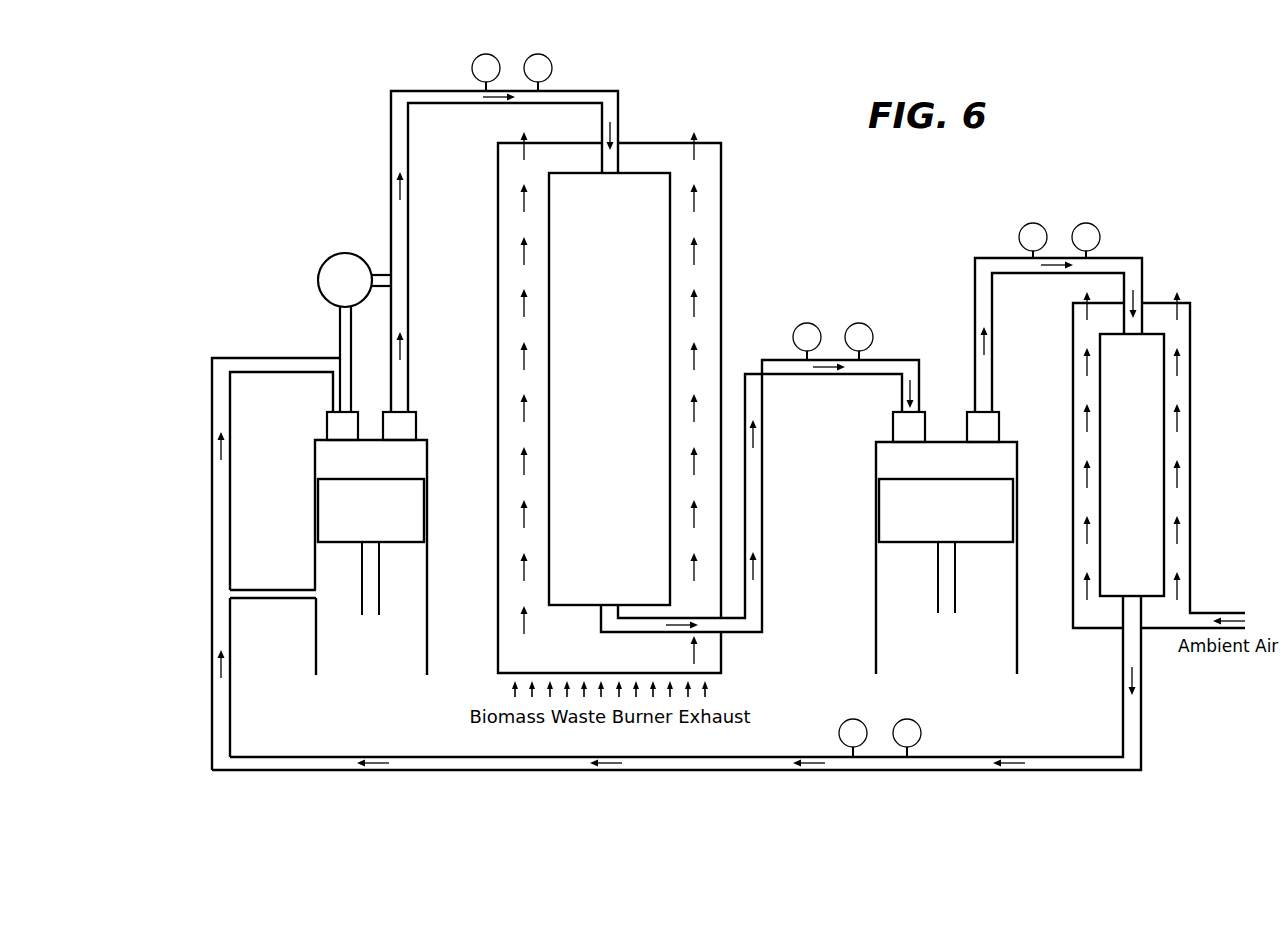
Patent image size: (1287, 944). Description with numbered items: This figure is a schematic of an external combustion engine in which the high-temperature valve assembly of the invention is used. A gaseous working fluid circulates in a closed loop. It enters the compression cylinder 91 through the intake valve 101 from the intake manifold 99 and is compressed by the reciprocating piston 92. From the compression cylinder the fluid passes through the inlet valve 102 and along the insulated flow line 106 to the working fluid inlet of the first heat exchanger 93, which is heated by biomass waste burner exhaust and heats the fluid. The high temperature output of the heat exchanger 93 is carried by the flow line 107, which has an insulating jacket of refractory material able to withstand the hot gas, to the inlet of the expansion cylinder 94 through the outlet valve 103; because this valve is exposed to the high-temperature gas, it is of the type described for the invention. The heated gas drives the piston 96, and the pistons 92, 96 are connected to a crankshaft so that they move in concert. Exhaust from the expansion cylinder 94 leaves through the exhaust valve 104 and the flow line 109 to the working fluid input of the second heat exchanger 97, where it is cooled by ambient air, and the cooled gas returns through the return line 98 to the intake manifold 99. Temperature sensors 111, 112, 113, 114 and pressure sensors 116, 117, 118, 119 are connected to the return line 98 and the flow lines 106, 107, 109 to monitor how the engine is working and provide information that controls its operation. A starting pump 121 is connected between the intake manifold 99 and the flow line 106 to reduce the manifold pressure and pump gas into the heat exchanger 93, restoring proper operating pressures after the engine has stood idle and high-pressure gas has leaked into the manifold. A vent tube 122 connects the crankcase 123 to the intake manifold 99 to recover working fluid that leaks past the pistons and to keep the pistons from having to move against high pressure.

The compression cylinder 91 is at (325, 458).
The reciprocating piston 92 is at (417, 508).
The first heat exchanger 93 is at (655, 143).
The expansion cylinder 94 is at (888, 458).
The piston 96 is at (1007, 510).
The second heat exchanger 97 is at (1157, 305).
The return line 98 is at (667, 771).
The intake manifold 99 is at (222, 360).
The intake valve 101 is at (325, 412).
The inlet valve 102 is at (410, 412).
The outlet valve 103 is at (893, 412).
The exhaust valve 104 is at (999, 414).
The insulated flow line 106 is at (405, 302).
The flow line 107 is at (762, 505).
The flow line 109 is at (975, 285).
The temperature sensor 111 is at (845, 720).
The temperature sensor 112 is at (477, 57).
The temperature sensor 113 is at (798, 325).
The temperature sensor 114 is at (1024, 226).
The pressure sensor 116 is at (912, 720).
The pressure sensor 117 is at (542, 56).
The pressure sensor 118 is at (861, 323).
The pressure sensor 119 is at (1090, 225).
The starting pump 121 is at (327, 267).
The vent tube 122 is at (288, 598).
The crankcase 123 is at (417, 583).